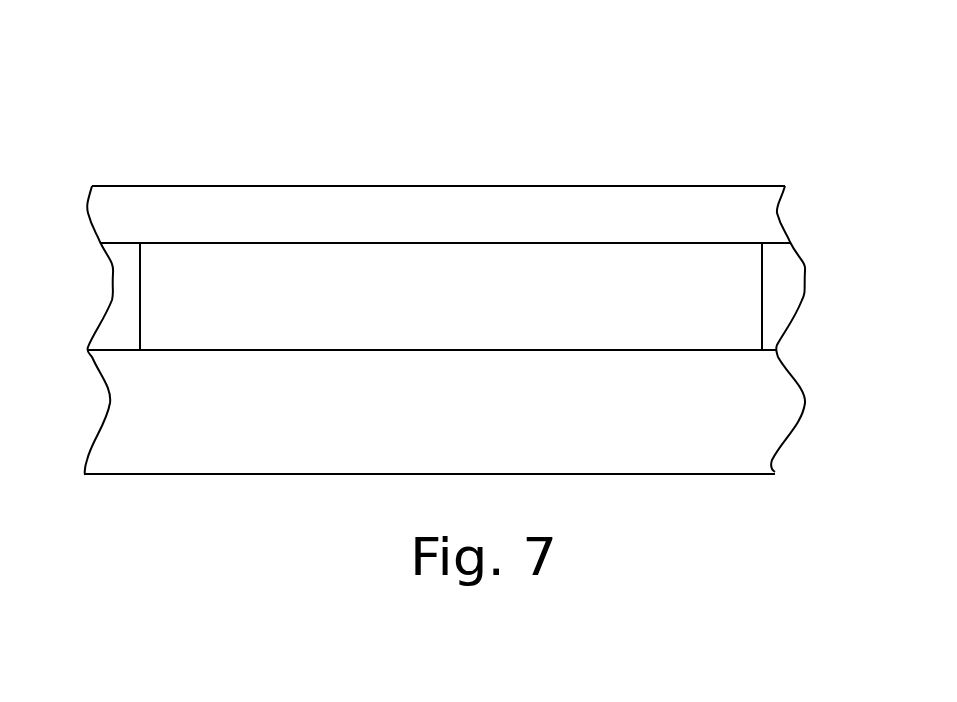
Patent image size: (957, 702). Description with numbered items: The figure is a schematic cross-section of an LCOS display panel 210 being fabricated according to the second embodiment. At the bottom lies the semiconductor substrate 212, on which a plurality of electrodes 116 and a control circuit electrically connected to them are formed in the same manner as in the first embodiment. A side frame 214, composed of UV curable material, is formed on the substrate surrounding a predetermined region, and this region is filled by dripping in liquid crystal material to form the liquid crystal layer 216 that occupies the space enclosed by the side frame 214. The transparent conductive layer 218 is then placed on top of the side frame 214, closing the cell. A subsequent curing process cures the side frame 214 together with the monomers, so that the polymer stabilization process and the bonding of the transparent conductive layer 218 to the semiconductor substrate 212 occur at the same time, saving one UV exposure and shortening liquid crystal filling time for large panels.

The LCOS display panel 210 is at (788, 100).
The semiconductor substrate 212 is at (480, 430).
The side frame 214 is at (125, 302).
The liquid crystal layer 216 is at (480, 313).
The transparent conductive layer 218 is at (480, 230).
The electrodes 116 is at (768, 352).